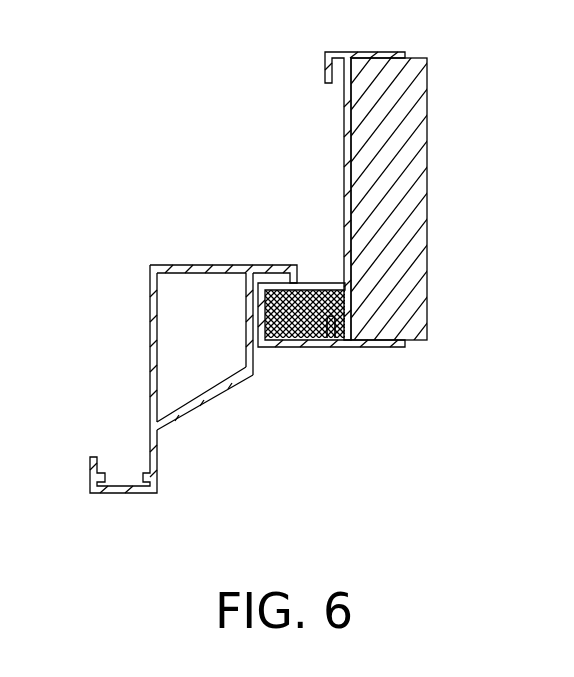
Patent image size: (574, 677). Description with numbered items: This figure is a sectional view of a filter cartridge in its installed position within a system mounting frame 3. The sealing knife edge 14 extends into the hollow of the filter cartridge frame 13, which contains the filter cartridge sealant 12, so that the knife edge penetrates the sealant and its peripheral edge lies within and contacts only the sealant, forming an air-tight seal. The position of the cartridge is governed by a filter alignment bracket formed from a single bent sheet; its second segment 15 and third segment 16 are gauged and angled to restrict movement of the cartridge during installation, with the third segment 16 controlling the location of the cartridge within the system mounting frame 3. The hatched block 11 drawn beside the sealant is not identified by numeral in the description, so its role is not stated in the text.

The system mounting frame 3 is at (105, 379).
The panel / wall block 11 is at (439, 224).
The filter cartridge sealant 12 is at (285, 264).
The filter cartridge frame 13 is at (331, 239).
The sealing knife edge 14 is at (223, 226).
The second segment 15 is at (237, 431).
The third segment 16 is at (155, 282).